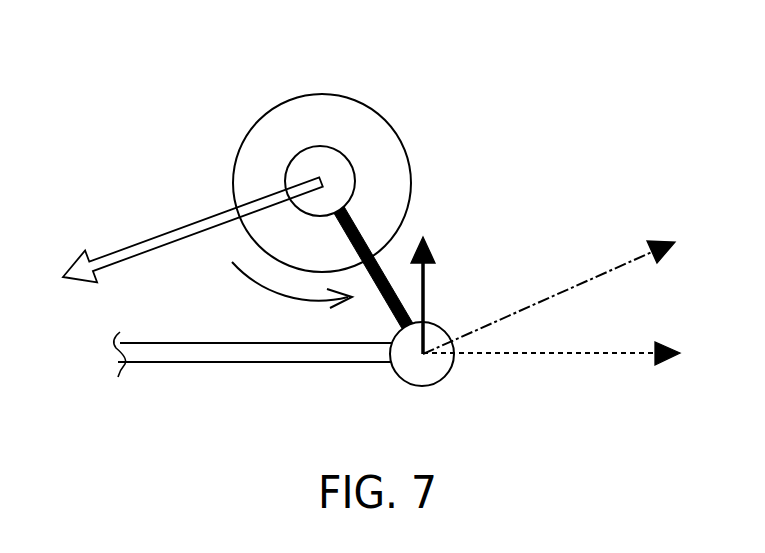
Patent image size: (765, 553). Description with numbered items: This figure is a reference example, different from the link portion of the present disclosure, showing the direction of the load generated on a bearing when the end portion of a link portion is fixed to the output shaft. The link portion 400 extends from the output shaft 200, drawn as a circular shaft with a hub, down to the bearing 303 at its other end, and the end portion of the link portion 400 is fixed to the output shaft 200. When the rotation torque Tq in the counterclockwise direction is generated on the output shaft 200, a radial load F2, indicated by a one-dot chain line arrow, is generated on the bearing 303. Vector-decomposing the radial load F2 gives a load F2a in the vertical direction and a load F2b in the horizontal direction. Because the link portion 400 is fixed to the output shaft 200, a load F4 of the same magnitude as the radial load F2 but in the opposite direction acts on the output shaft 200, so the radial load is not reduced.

The output shaft 200 is at (347, 112).
The link portion 400 is at (363, 227).
The bearing 303 is at (400, 378).
The load F4 is at (143, 238).
The radial load F2 is at (579, 284).
The load in the vertical direction F2a is at (425, 288).
The load in the horizontal direction F2b is at (588, 354).
The rotation torque Tq is at (290, 290).